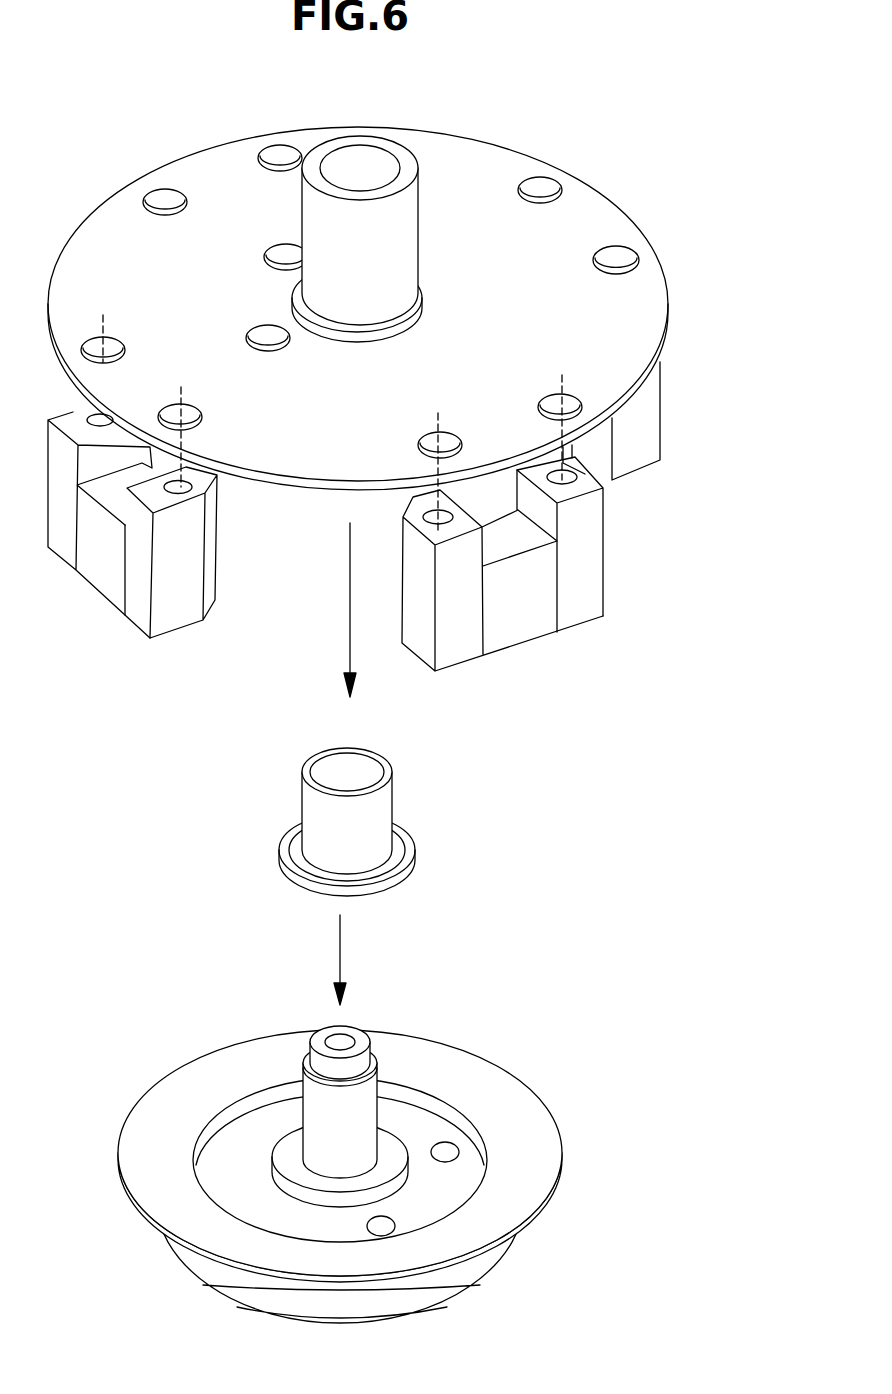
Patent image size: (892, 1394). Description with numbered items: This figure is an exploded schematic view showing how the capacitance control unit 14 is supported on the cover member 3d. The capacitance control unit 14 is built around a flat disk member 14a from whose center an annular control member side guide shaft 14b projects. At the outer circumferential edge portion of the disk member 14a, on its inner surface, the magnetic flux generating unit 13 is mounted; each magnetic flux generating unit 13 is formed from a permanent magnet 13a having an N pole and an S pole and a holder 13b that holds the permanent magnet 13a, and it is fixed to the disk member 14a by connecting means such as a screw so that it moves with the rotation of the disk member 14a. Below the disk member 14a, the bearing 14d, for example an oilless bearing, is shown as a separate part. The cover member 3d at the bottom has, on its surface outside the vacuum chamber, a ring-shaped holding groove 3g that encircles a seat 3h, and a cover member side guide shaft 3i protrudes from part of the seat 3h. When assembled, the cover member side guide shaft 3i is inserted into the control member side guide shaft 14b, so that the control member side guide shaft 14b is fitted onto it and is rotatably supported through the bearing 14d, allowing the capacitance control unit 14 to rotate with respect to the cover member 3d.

The capacitance control unit 14 is at (403, 394).
The disk member 14a is at (637, 302).
The control member side guide shaft 14b is at (393, 218).
The bearing 14d is at (377, 801).
The magnetic flux generating unit 13 is at (572, 582).
The permanent magnet 13a is at (513, 618).
The holder 13b is at (583, 587).
The cover member 3d is at (380, 1160).
The holding groove 3g is at (450, 1195).
The seat 3h is at (407, 1167).
The cover member side guide shaft 3i is at (363, 1108).